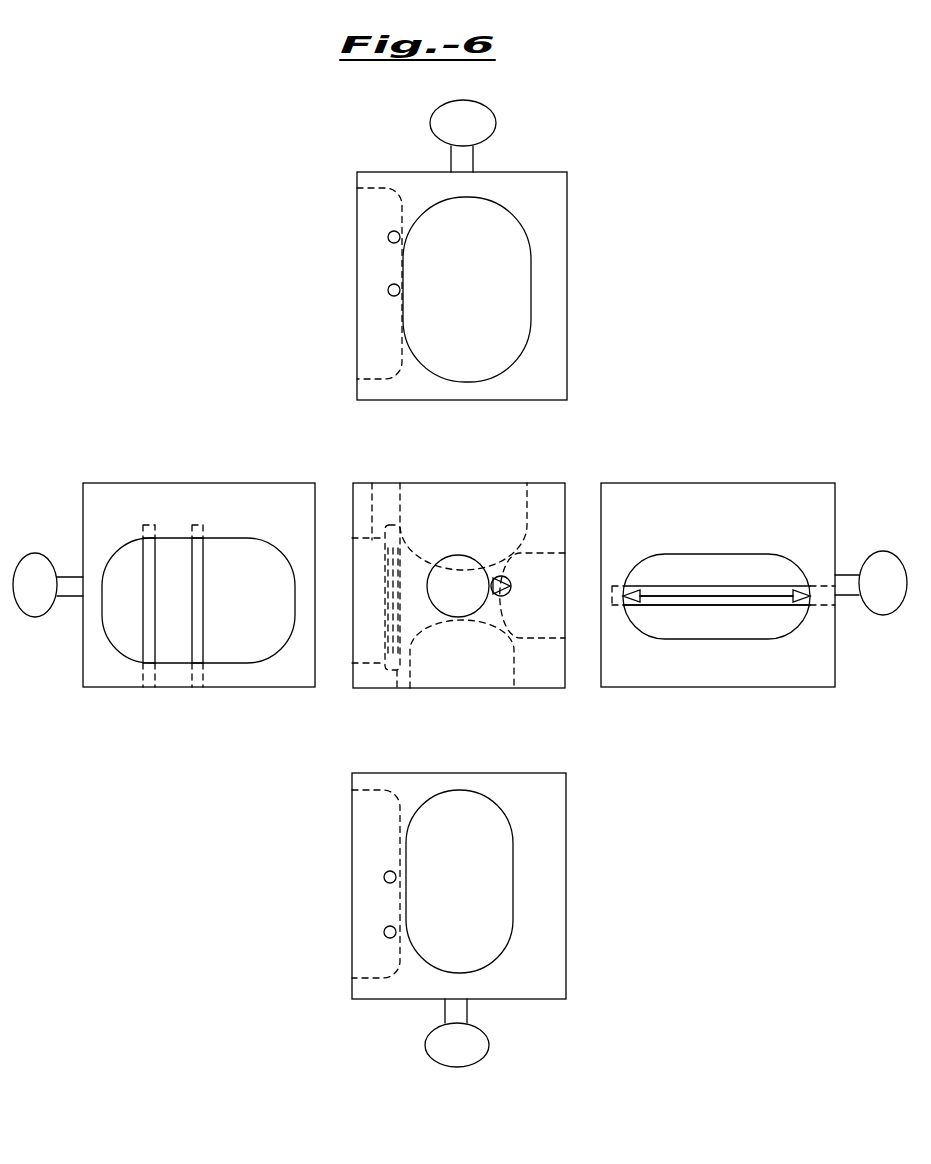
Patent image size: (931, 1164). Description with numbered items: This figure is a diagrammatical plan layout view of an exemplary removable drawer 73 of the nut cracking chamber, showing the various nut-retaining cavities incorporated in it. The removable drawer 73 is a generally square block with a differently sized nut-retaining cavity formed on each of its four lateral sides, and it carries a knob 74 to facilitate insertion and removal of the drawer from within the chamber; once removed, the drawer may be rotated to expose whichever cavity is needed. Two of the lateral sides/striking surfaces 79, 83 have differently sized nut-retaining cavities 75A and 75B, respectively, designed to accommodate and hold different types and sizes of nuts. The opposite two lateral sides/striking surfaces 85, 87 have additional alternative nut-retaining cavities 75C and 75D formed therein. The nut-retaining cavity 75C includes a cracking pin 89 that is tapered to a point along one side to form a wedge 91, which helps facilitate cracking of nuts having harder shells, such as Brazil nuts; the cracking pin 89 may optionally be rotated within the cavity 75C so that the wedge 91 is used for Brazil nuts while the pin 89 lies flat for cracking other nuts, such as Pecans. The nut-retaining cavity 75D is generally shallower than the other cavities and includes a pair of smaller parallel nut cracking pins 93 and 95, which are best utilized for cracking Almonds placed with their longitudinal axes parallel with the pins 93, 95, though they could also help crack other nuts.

The removable drawer 73 is at (660, 403).
The knob 74 is at (480, 102).
The nut-retaining cavity 75A is at (490, 298).
The nut-retaining cavity 75B is at (482, 880).
The nut-retaining cavity 75C is at (664, 557).
The nut-retaining cavity 75D is at (362, 318).
The lateral side/striking surface 79 is at (543, 183).
The lateral side/striking surface 83 is at (552, 820).
The lateral side/striking surface 85 is at (742, 490).
The lateral side/striking surface 87 is at (226, 497).
The cracking pin 89 is at (650, 605).
The wedge 91 is at (710, 597).
The nut cracking pin 93 is at (143, 641).
The nut cracking pin 95 is at (193, 641).